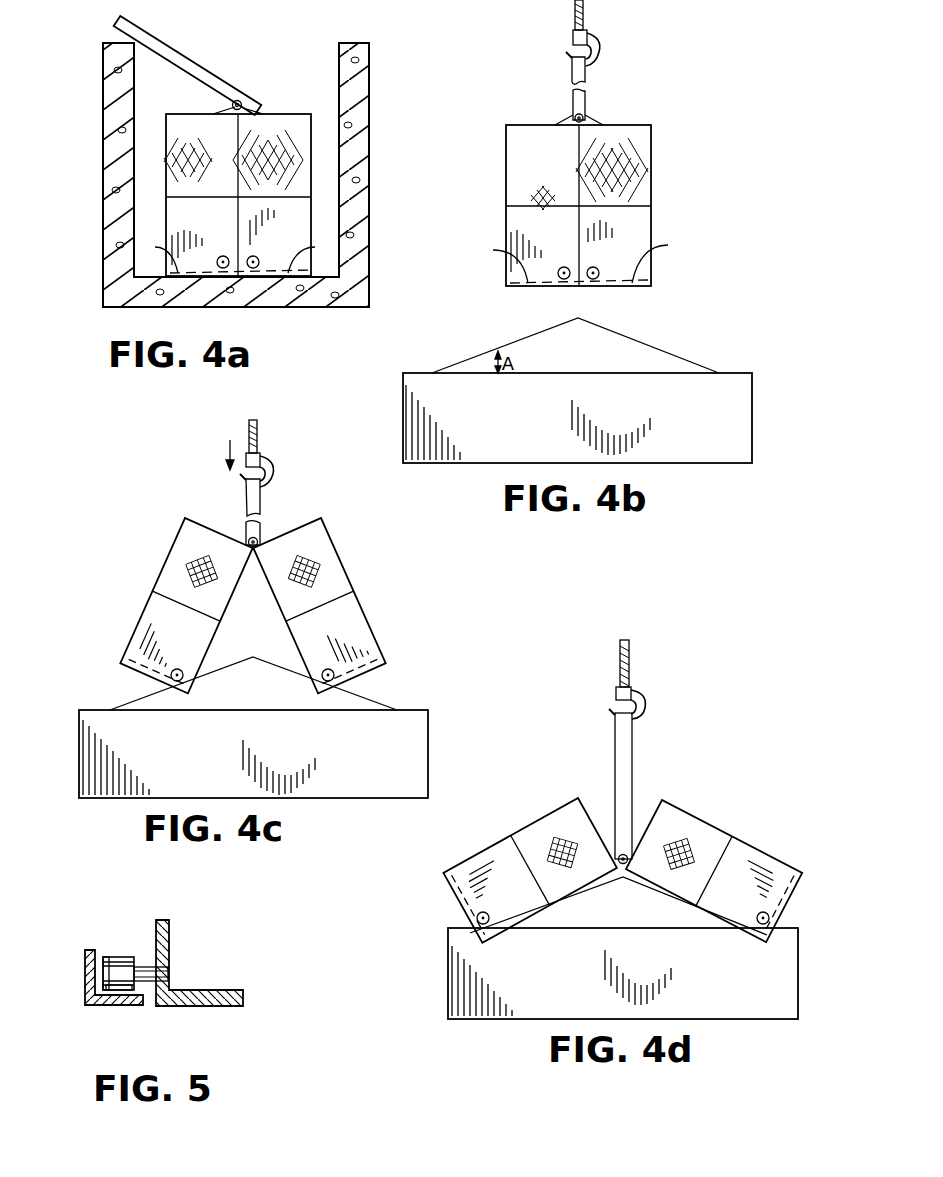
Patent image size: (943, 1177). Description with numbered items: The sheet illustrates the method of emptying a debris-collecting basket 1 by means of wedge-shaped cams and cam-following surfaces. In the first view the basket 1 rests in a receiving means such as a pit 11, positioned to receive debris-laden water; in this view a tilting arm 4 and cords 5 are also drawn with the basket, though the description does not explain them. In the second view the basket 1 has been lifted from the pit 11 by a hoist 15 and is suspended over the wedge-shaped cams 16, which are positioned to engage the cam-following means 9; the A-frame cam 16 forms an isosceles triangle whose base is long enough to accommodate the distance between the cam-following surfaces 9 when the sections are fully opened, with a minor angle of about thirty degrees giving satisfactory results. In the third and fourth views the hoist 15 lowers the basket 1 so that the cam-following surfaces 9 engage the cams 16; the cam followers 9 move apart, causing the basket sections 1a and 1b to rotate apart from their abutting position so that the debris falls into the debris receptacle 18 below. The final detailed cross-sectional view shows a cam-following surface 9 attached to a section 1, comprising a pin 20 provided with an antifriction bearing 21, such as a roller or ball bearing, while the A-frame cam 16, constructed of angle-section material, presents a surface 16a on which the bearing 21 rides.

In FIG. 4A, the basket 1 is at (282, 112).
In FIG. 4B, the basket 1 is at (652, 127).
In FIG. 5, the basket 1 is at (170, 940).
In FIG. 4C, the basket section 1a is at (340, 556).
In FIG. 4D, the basket section 1a is at (700, 820).
In FIG. 4C, the basket section 1b is at (168, 556).
In FIG. 4D, the basket section 1b is at (566, 812).
In FIG. 4A, the tilting arm 4 is at (163, 202).
In FIG. 4A, the flexible cord 5 is at (236, 254).
In FIG. 4B, the flexible cord 5 is at (581, 258).
In FIG. 4A, the cam-following surface 9 is at (226, 256).
In FIG. 4B, the cam-following surface 9 is at (595, 266).
In FIG. 4C, the cam-following surface 9 is at (185, 673).
In FIG. 4D, the cam-following surface 9 is at (475, 918).
In FIG. 5, the cam-following surface 9 is at (125, 956).
In FIG. 4A, the pit 11 is at (365, 72).
In FIG. 4B, the hoist 15 is at (590, 36).
In FIG. 4C, the hoist 15 is at (262, 456).
In FIG. 4B, the A-frame cam 16 is at (478, 353).
In FIG. 4C, the A-frame cam 16 is at (118, 707).
In FIG. 4D, the A-frame cam 16 is at (580, 887).
In FIG. 5, the A-frame cam 16 is at (88, 950).
In FIG. 5, the surface 16a is at (115, 992).
In FIG. 4B, the debris receptacle 18 is at (753, 392).
In FIG. 4C, the debris receptacle 18 is at (392, 759).
In FIG. 4D, the debris receptacle 18 is at (524, 973).
In FIG. 5, the pin 20 is at (168, 975).
In FIG. 5, the antifriction bearing 21 is at (115, 958).